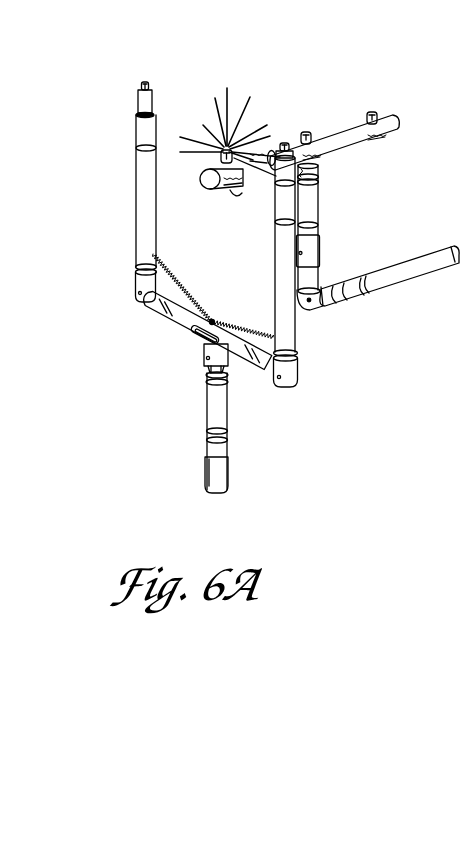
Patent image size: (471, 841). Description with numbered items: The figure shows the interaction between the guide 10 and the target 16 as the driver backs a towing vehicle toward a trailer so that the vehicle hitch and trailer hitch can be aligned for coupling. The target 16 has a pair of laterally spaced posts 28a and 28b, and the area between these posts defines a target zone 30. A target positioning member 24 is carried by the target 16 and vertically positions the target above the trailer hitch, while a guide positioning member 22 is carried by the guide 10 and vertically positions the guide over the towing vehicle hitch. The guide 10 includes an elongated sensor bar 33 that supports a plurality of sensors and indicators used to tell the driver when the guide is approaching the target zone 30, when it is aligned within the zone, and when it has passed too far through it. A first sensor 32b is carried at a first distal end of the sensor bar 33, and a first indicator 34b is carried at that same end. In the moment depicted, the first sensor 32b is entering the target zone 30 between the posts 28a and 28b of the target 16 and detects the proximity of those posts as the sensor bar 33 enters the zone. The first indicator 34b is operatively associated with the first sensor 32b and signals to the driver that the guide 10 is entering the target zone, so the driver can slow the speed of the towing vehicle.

The guide 10 is at (342, 247).
The target 16 is at (198, 418).
The guide positioning member 22 is at (315, 245).
The target positioning member 24 is at (225, 467).
The post 28a is at (145, 185).
The post 28b is at (288, 318).
The target zone 30 is at (228, 262).
The first sensor 32b is at (247, 186).
The sensor bar 33 is at (338, 136).
The first indicator 34b is at (219, 150).